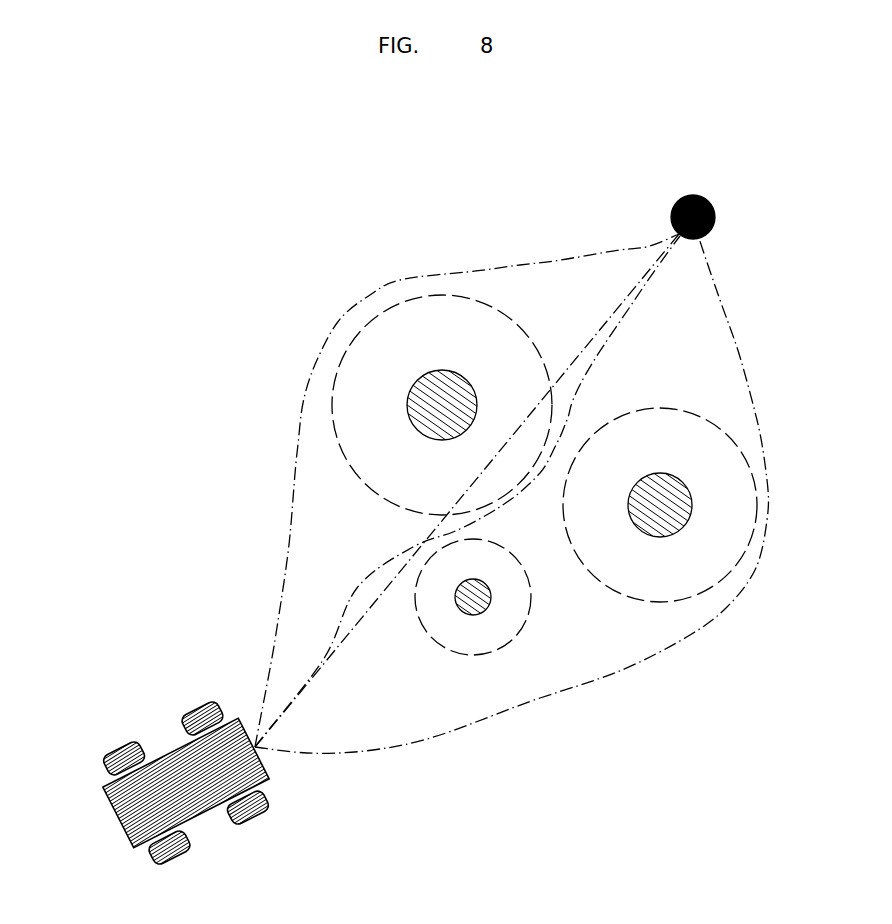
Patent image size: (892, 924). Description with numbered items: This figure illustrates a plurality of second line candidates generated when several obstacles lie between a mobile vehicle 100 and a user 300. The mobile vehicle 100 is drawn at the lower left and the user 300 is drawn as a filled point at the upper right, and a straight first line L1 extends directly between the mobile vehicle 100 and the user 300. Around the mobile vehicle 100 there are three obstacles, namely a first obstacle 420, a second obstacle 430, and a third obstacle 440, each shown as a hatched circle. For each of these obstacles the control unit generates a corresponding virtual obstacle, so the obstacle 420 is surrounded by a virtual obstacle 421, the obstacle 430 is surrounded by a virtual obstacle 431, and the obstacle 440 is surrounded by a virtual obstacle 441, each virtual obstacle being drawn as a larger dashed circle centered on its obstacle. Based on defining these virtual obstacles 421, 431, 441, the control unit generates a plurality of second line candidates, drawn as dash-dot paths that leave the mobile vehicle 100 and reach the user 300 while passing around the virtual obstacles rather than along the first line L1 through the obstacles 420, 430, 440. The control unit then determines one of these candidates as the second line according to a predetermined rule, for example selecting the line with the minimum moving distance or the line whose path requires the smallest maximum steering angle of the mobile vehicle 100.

The mobile vehicle 100 is at (177, 753).
The user 300 is at (706, 198).
The obstacle 420 is at (435, 370).
The virtual obstacle 421 is at (490, 308).
The obstacle 430 is at (480, 614).
The virtual obstacle 431 is at (517, 633).
The obstacle 440 is at (663, 537).
The virtual obstacle 441 is at (725, 577).
The first line L1 is at (579, 357).